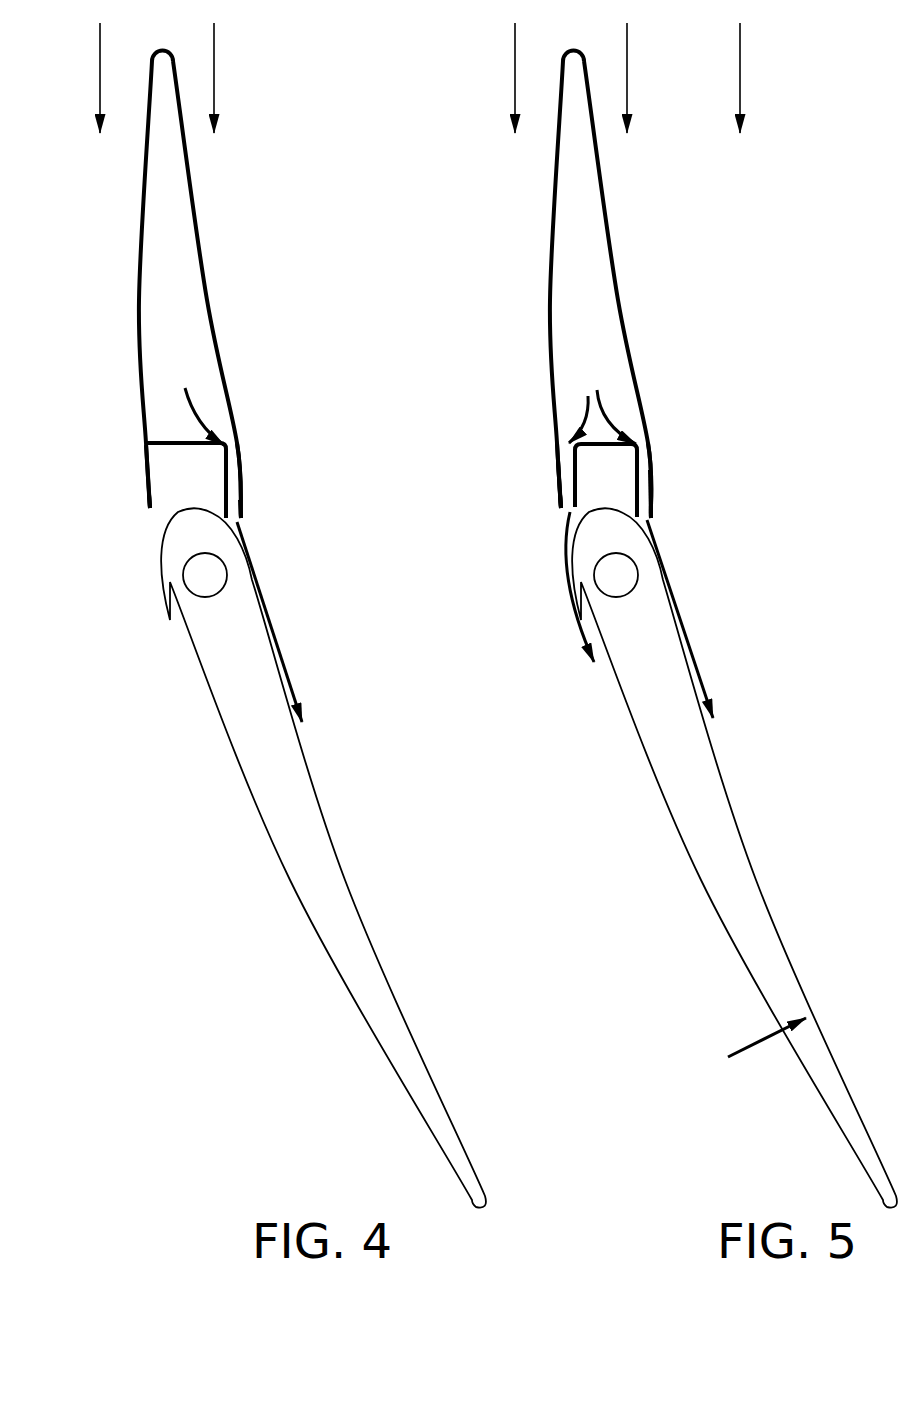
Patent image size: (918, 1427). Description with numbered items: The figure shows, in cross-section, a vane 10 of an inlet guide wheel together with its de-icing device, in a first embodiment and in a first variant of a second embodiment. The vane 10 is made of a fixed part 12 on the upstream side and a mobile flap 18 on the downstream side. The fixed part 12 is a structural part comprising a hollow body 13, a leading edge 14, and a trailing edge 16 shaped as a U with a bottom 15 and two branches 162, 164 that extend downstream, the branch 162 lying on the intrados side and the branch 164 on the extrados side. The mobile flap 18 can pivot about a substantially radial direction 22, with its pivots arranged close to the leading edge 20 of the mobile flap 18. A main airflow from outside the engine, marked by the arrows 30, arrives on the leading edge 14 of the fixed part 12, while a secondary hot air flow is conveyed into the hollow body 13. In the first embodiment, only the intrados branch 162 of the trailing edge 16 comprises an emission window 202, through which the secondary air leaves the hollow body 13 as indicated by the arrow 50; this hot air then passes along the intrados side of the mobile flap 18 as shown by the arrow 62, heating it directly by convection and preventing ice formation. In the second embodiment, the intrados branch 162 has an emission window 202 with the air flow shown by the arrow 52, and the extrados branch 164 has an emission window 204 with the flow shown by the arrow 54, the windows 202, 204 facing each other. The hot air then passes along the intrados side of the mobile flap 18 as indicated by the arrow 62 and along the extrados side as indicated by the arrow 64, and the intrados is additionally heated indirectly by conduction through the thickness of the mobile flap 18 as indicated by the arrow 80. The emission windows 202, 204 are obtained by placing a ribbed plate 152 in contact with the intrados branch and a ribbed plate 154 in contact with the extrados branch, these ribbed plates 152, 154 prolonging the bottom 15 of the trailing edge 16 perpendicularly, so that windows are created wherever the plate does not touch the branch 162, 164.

In FIG. 4, the vane 10 is at (104, 826).
In FIG. 5, the vane 10 is at (578, 787).
In FIG. 4, the fixed part 12 is at (212, 308).
In FIG. 5, the fixed part 12 is at (621, 281).
In FIG. 4, the hollow body 13 is at (204, 259).
In FIG. 5, the hollow body 13 is at (548, 263).
In FIG. 4, the leading edge 14 is at (162, 46).
In FIG. 5, the leading edge 14 is at (574, 45).
In FIG. 4, the bottom 15 is at (192, 441).
In FIG. 5, the bottom 15 is at (606, 441).
In FIG. 4, the trailing edge 16 is at (140, 500).
In FIG. 5, the trailing edge 16 is at (557, 502).
In FIG. 4, the mobile flap 18 is at (307, 922).
In FIG. 5, the mobile flap 18 is at (759, 873).
In FIG. 4, the leading edge of the mobile flap 20 is at (285, 857).
In FIG. 4, the radial direction 22 is at (188, 592).
In FIG. 5, the radial direction 22 is at (640, 578).
In FIG. 4, the arrows 30 is at (214, 82).
In FIG. 5, the arrows 30 is at (740, 88).
In FIG. 4, the arrow 50 is at (193, 400).
In FIG. 5, the arrow 52 is at (613, 400).
In FIG. 5, the arrow 54 is at (585, 408).
In FIG. 4, the arrow 62 is at (290, 667).
In FIG. 5, the arrow 62 is at (693, 650).
In FIG. 5, the arrow 64 is at (576, 622).
In FIG. 5, the arrow 80 is at (752, 1049).
In FIG. 4, the ribbed plate 152 is at (229, 497).
In FIG. 5, the ribbed plate 152 is at (641, 505).
In FIG. 5, the ribbed plate 154 is at (576, 483).
In FIG. 4, the branch 162 is at (246, 512).
In FIG. 5, the branch 162 is at (652, 483).
In FIG. 4, the branch 164 is at (146, 465).
In FIG. 5, the branch 164 is at (558, 470).
In FIG. 4, the emission window 202 is at (239, 462).
In FIG. 5, the emission window 202 is at (643, 463).
In FIG. 5, the emission window 204 is at (565, 458).